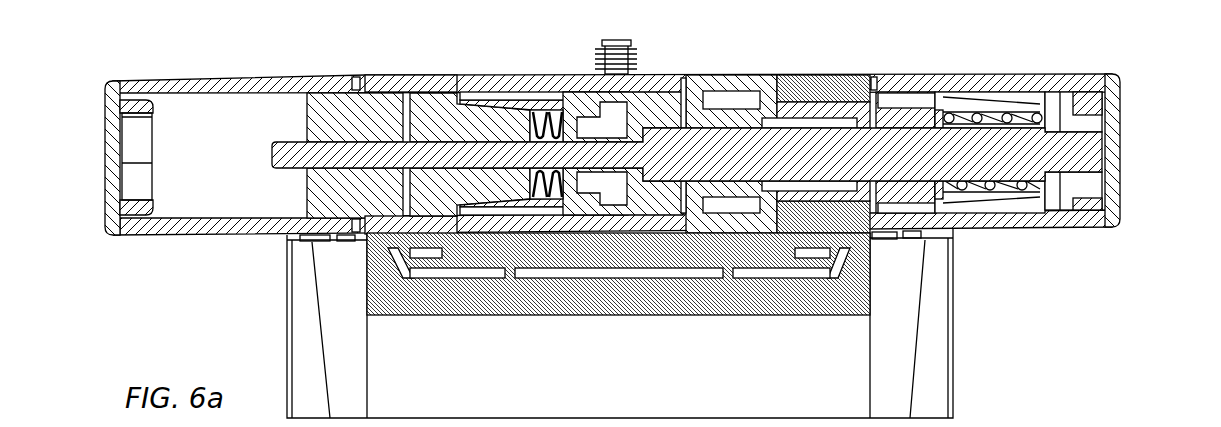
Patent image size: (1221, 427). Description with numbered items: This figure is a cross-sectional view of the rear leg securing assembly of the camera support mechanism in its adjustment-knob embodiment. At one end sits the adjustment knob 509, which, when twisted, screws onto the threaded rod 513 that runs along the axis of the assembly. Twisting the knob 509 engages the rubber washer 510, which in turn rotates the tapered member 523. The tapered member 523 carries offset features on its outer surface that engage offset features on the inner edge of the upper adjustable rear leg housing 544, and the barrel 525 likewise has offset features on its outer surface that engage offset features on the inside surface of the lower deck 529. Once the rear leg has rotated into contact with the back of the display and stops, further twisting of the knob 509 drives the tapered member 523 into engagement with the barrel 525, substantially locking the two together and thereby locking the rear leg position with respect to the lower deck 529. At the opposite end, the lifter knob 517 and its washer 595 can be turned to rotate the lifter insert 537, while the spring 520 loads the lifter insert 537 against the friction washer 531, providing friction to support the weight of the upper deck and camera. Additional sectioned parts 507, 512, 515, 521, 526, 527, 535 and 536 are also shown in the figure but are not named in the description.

The end cap 507 is at (105, 130).
The adjustment knob 509 is at (170, 82).
The rubber washer 510 is at (405, 250).
The spring seat 512 is at (545, 197).
The threaded rod 513 is at (275, 160).
The mounting frame / fastener 515 is at (612, 42).
The lifter knob 517 is at (960, 84).
The spring 520 is at (991, 190).
The end retainer 521 is at (1082, 90).
The tapered member 523 is at (438, 98).
The barrel 525 is at (541, 108).
The bearing sleeve 526 is at (590, 102).
The fluid channel 527 is at (615, 205).
The lower deck 529 is at (487, 82).
The friction washer 531 is at (686, 80).
The end stop 535 is at (1052, 205).
The end wall 536 is at (1122, 113).
The lifter insert 537 is at (745, 207).
The upper adjustable rear leg housing 544 is at (386, 76).
The washer 595 is at (874, 78).